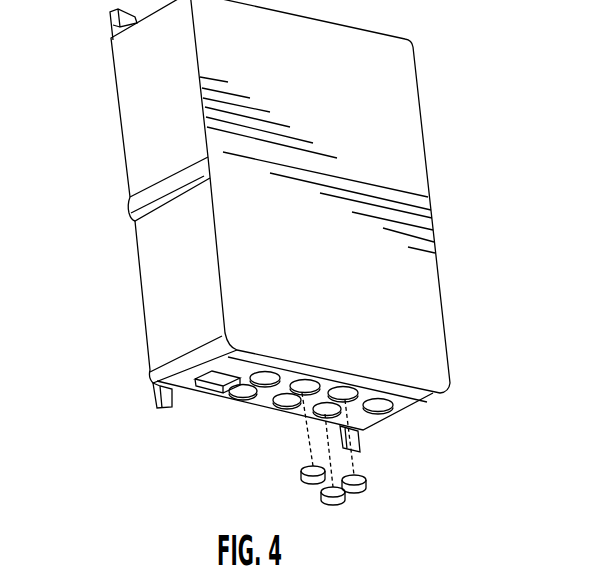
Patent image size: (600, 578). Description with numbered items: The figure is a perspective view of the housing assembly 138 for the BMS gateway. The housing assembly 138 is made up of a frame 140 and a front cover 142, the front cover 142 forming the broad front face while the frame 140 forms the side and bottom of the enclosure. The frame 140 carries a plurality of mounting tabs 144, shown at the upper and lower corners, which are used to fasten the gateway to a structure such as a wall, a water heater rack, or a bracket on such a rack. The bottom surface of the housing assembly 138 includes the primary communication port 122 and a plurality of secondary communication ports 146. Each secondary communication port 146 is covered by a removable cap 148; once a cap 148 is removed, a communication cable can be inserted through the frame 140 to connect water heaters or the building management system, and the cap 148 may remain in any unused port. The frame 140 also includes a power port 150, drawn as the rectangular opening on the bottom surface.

The primary communication port 122 is at (390, 407).
The housing assembly 138 is at (410, 83).
The frame 140 is at (141, 272).
The front cover 142 is at (356, 245).
The mounting tabs 144 is at (110, 19).
The secondary communication ports 146 is at (316, 412).
The removable cap 148 is at (333, 506).
The power port 150 is at (213, 389).